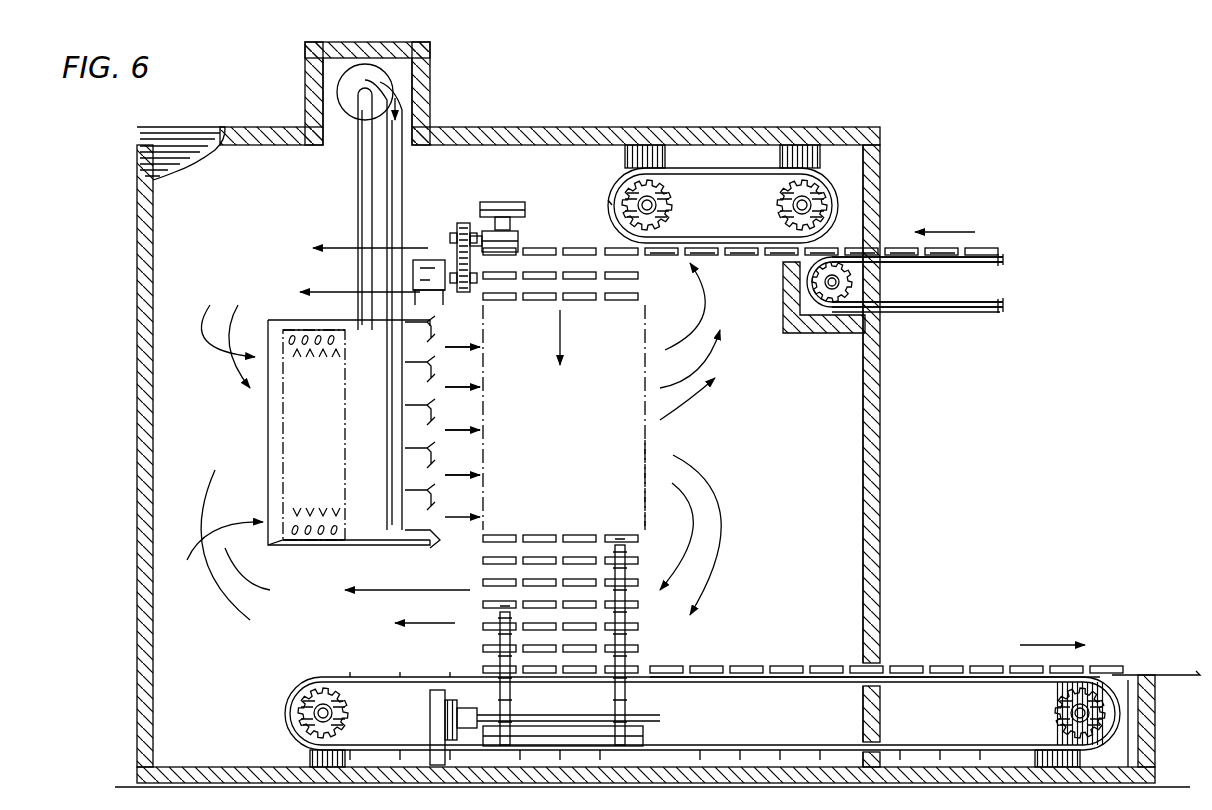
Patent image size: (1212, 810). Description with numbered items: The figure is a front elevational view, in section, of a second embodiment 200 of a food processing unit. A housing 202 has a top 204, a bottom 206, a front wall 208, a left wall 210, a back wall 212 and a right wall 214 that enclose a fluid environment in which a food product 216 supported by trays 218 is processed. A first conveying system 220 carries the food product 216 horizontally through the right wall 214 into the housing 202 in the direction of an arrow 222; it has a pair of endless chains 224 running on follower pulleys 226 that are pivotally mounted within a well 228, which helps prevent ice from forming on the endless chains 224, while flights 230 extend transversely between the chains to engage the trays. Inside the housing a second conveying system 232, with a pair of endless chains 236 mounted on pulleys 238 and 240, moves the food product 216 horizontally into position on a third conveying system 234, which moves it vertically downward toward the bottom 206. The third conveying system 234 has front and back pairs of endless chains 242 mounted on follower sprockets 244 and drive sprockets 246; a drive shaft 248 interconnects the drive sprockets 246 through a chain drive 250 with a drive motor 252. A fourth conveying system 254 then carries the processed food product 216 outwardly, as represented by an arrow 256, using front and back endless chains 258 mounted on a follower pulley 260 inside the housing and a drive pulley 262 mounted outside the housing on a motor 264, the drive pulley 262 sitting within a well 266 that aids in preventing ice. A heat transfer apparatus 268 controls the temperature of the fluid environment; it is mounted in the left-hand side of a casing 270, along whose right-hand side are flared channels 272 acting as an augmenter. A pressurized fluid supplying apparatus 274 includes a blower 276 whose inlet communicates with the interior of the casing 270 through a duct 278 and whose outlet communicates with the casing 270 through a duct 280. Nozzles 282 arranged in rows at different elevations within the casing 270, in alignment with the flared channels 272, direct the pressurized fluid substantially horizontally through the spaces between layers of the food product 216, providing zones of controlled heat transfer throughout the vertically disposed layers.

The second embodiment 200 is at (835, 125).
The housing 202 is at (133, 156).
The top 204 is at (492, 127).
The bottom 206 is at (232, 767).
The front wall 208 is at (180, 138).
The left wall 210 is at (140, 305).
The back wall 212 is at (868, 512).
The right wall 214 is at (878, 482).
The food product 216 is at (965, 247).
The trays 218 is at (980, 248).
The first conveying system 220 is at (1010, 302).
The arrow 222 is at (945, 232).
The endless chains 224 is at (928, 312).
The follower pulleys 226 is at (855, 286).
The well 228 is at (797, 310).
The flights 230 is at (1000, 258).
The second conveying system 232 is at (606, 202).
The third conveying system 234 is at (655, 462).
The endless chains 236 is at (684, 172).
The pulley 238 is at (672, 194).
The pulley 240 is at (768, 200).
The endless chains 242 is at (500, 642).
The follower sprockets 244 is at (440, 720).
The drive sprockets 246 is at (530, 235).
The drive shaft 248 is at (483, 203).
The chain drive 250 is at (457, 250).
The drive motor 252 is at (413, 276).
The fourth conveying system 254 is at (300, 685).
The arrow 256 is at (1045, 645).
The endless chains 258 is at (745, 682).
The follower pulley 260 is at (348, 713).
The drive pulley 262 is at (1055, 706).
The motor 264 is at (1035, 728).
The well 266 is at (1150, 700).
The heat transfer apparatus 268 is at (282, 318).
The casing 270 is at (325, 548).
The flared channels 272 is at (440, 328).
The pressurized fluid supplying apparatus 274 is at (400, 78).
The blower 276 is at (305, 88).
The duct 278 is at (358, 160).
The duct 280 is at (402, 158).
The nozzles 282 is at (440, 364).